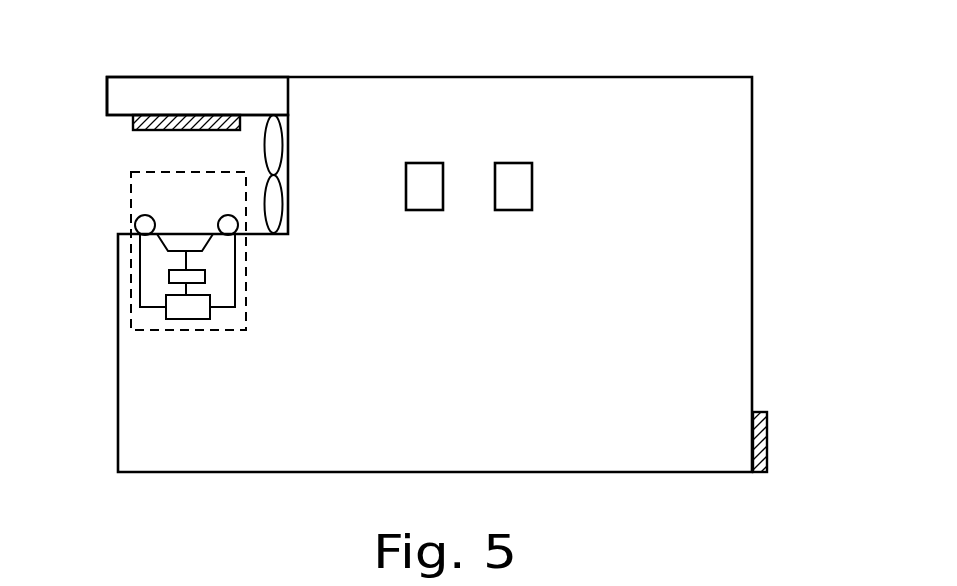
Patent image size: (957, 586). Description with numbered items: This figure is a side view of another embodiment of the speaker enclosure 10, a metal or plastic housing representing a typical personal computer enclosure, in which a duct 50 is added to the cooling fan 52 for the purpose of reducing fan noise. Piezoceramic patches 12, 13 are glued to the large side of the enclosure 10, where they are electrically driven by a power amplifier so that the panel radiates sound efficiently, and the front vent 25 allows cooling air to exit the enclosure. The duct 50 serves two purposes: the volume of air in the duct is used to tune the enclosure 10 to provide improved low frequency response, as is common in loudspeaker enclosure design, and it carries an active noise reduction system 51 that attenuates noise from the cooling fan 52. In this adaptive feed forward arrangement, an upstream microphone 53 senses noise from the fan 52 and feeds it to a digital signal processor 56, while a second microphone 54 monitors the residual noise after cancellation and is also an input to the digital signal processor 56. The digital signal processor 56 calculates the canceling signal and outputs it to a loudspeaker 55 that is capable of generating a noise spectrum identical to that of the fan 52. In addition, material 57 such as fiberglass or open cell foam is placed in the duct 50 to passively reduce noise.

The speaker enclosure 10 is at (745, 45).
The piezoceramic patch 12 is at (424, 172).
The piezoceramic patch 13 is at (512, 172).
The front vent 25 is at (765, 447).
The duct 50 is at (219, 95).
The active noise reduction system 51 is at (131, 172).
The cooling fan 52 is at (276, 139).
The upstream microphone 53 is at (225, 214).
The second microphone 54 is at (135, 224).
The loudspeaker 55 is at (215, 240).
The digital signal processor 56 is at (186, 310).
The material 57 is at (163, 124).